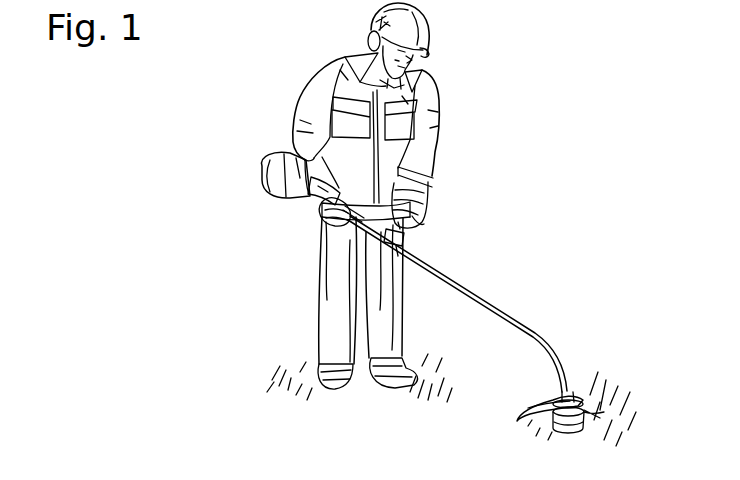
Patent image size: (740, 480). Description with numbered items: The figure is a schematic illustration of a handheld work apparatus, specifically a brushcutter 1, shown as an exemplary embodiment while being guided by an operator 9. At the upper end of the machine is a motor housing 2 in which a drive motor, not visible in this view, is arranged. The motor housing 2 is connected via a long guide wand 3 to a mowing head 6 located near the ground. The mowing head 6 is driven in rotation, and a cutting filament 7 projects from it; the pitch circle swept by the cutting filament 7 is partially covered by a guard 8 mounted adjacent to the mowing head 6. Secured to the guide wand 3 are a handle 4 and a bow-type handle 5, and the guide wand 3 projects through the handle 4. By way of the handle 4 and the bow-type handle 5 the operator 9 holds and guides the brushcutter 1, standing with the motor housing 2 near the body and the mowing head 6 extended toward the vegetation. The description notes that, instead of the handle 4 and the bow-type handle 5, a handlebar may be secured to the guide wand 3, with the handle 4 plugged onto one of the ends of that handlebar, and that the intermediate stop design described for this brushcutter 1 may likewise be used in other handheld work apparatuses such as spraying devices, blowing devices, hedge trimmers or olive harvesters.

The brushcutter 1 is at (470, 253).
The motor housing 2 is at (270, 175).
The guide wand 3 is at (508, 317).
The handle 4 is at (342, 212).
The bow-type handle 5 is at (416, 218).
The mowing head 6 is at (573, 422).
The cutting filament 7 is at (584, 410).
The guard 8 is at (522, 410).
The operator 9 is at (424, 127).